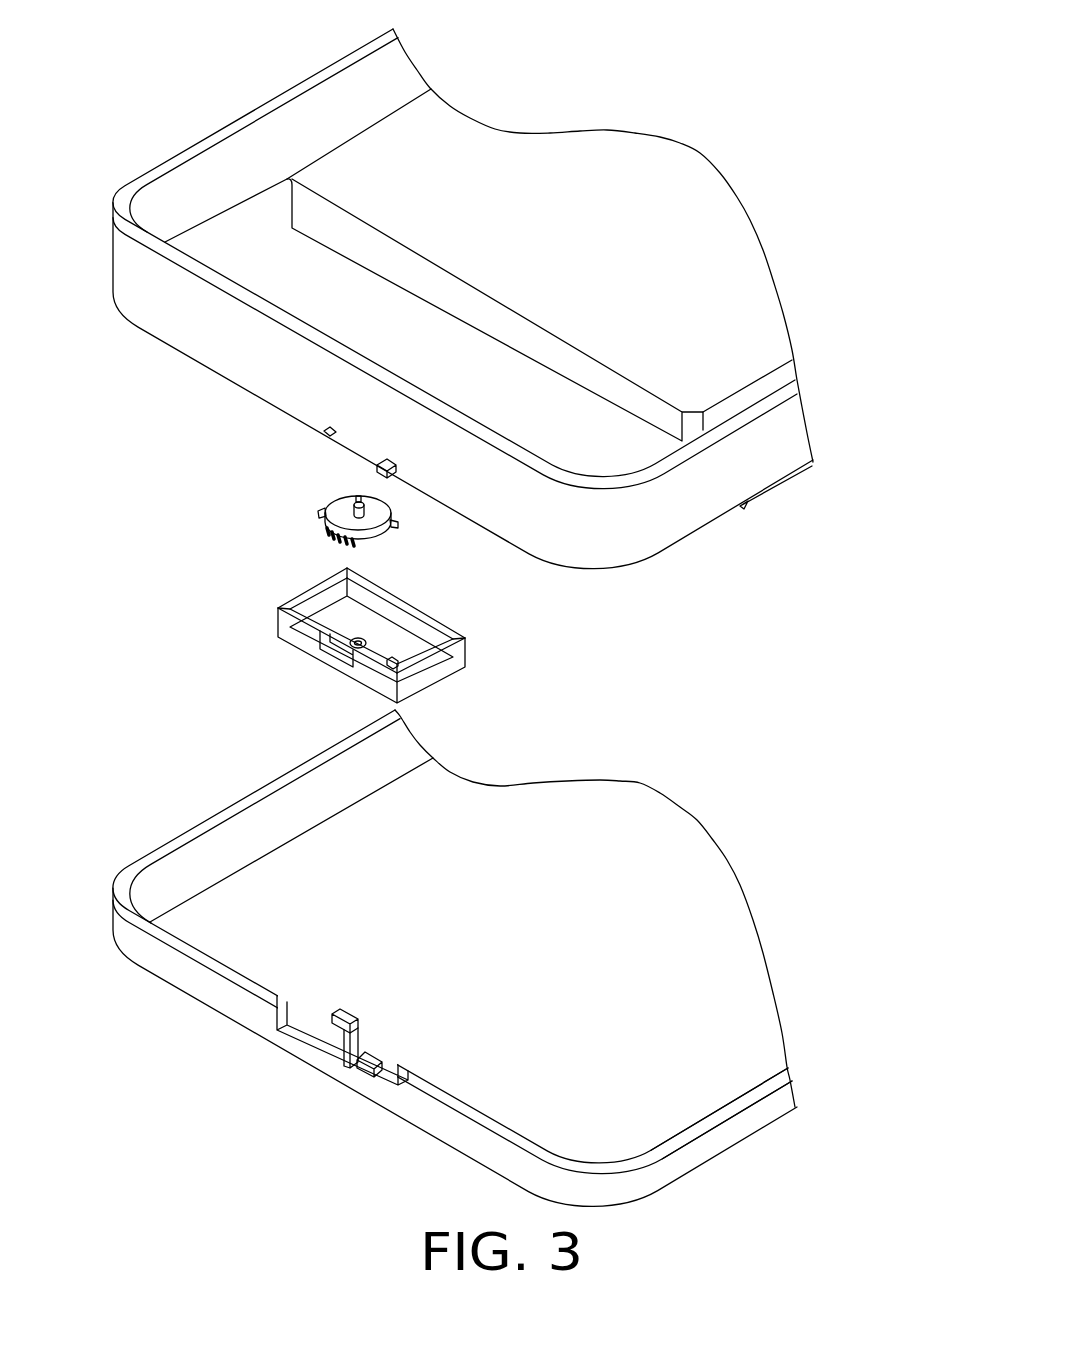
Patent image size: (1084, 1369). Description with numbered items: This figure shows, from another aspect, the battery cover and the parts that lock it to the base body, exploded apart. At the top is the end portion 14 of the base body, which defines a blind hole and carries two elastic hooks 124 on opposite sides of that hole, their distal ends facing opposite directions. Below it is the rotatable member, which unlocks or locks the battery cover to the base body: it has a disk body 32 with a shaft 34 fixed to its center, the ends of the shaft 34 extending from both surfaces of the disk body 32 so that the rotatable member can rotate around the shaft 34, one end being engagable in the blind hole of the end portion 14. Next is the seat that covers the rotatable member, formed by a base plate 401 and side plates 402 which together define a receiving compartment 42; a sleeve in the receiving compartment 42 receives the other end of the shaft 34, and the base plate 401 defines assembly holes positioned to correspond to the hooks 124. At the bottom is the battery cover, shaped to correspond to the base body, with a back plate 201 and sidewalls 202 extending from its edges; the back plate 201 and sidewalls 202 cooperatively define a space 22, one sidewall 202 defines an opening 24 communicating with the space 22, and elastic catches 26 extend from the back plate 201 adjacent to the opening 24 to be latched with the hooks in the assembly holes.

The end portion 14 is at (192, 320).
The elastic hooks 124 is at (375, 463).
The shaft 34 is at (354, 500).
The disk body 32 is at (327, 522).
The receiving compartment 42 is at (318, 598).
The base plate 401 is at (387, 640).
The side plates 402 is at (433, 668).
The back plate 201 is at (723, 952).
The sidewalls 202 is at (200, 970).
The opening 24 is at (295, 1038).
The elastic catches 26 is at (357, 1062).
The space 22 is at (687, 1097).